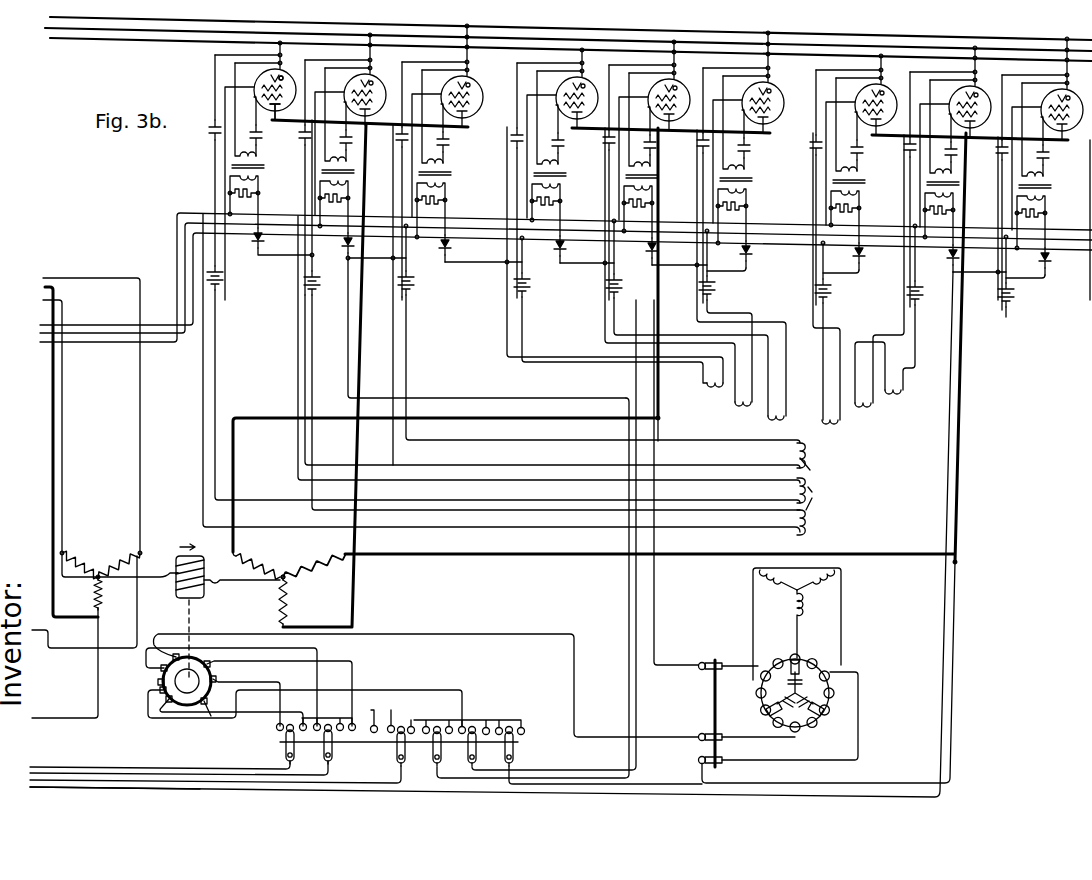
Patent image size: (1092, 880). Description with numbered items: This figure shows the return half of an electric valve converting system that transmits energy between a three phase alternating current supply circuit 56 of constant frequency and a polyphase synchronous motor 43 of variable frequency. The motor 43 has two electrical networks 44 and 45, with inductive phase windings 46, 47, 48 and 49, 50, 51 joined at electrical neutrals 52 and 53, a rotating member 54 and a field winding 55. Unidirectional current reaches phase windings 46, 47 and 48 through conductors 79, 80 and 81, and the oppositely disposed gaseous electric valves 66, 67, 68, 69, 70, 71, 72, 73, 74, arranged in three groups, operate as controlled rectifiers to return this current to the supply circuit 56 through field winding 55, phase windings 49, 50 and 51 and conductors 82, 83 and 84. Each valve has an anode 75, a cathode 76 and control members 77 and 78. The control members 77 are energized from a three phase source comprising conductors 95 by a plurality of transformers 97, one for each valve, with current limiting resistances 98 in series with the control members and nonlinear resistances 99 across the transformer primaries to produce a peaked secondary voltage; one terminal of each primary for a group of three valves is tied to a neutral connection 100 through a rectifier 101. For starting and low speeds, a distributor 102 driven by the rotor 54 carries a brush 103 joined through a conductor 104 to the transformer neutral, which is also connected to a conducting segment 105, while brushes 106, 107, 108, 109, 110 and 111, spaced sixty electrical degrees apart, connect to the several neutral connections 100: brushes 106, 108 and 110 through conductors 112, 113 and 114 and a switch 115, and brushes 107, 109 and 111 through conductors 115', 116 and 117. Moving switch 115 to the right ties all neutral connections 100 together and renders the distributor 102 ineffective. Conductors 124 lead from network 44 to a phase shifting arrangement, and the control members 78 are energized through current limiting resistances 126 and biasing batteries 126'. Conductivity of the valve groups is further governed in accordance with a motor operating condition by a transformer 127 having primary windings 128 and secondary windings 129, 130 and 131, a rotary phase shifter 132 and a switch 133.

The three phase alternating current supply circuit 56 is at (50, 18).
The electric valve 66 is at (257, 80).
The electric valve 67 is at (342, 246).
The electric valve 68 is at (434, 248).
The electric valve 69 is at (639, 232).
The electric valve 70 is at (694, 228).
The electric valve 71 is at (768, 225).
The electric valve 72 is at (866, 228).
The electric valve 73 is at (959, 181).
The electric valve 74 is at (1043, 173).
The anode 75 is at (275, 120).
The cathode 76 is at (256, 86).
The control member 77 is at (256, 97).
The control member 78 is at (284, 78).
The conductor 79 is at (48, 301).
The conductor 80 is at (45, 287).
The conductor 81 is at (62, 278).
The conductor 82 is at (355, 606).
The conductor 83 is at (661, 412).
The conductor 84 is at (960, 482).
The conductors 95 is at (41, 342).
The transformer 97 is at (262, 167).
The current limiting resistance 98 is at (260, 137).
The nonlinear resistance 99 is at (258, 198).
The neutral connection 100 is at (346, 259).
The rectifier 101 is at (254, 244).
The distributor 102 is at (187, 698).
The brush 103 is at (158, 668).
The conductor 104 is at (138, 790).
The conducting segment 105 is at (158, 691).
The brush 106 is at (230, 683).
The brush 107 is at (212, 717).
The brush 108 is at (172, 654).
The brush 109 is at (212, 664).
The brush 110 is at (164, 701).
The brush 111 is at (156, 682).
The conductor 112 is at (35, 768).
The conductor 113 is at (70, 775).
The conductor 114 is at (106, 781).
The switch 115 is at (413, 738).
The conductor 115' is at (569, 535).
The conductor 116 is at (628, 712).
The conductor 117 is at (680, 795).
The conductors 124 is at (44, 714).
The current limiting resistance 126 is at (202, 160).
The battery 126' is at (503, 384).
The transformer 127 is at (828, 489).
The primary windings 128 is at (804, 608).
The secondary winding 129 is at (818, 484).
The secondary winding 130 is at (744, 412).
The secondary winding 131 is at (858, 410).
The rotary phase shifter 132 is at (790, 707).
The switch 133 is at (712, 714).
The polyphase alternating current motor 43 is at (200, 640).
The electrical network 44 is at (135, 556).
The electrical network 45 is at (289, 559).
The inductive phase winding 46 is at (103, 596).
The inductive phase winding 47 is at (80, 558).
The inductive phase winding 48 is at (119, 558).
The inductive phase winding 49 is at (290, 600).
The inductive phase winding 50 is at (257, 560).
The inductive phase winding 51 is at (318, 568).
The electrical neutral 52 is at (96, 579).
The electrical neutral 53 is at (282, 580).
The rotating member 54 is at (176, 594).
The field winding 55 is at (209, 588).